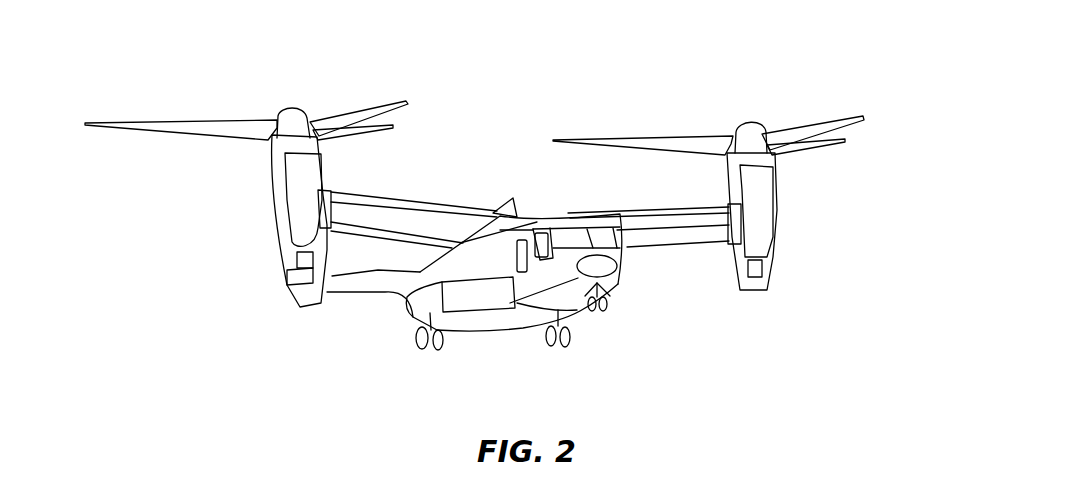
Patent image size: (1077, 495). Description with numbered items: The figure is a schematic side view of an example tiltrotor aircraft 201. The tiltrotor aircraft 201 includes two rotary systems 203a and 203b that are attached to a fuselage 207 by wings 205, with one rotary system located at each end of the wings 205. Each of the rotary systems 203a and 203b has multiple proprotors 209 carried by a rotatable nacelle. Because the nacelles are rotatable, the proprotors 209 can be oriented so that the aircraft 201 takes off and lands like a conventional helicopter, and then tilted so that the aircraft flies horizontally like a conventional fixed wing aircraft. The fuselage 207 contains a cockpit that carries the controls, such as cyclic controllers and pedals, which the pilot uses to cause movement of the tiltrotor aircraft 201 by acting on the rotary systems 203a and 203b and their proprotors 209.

The tiltrotor aircraft 201 is at (562, 90).
The rotary system 203a is at (263, 226).
The rotary system 203b is at (787, 232).
The wings 205 is at (402, 202).
The fuselage 207 is at (622, 273).
The proprotors 209 is at (379, 101).